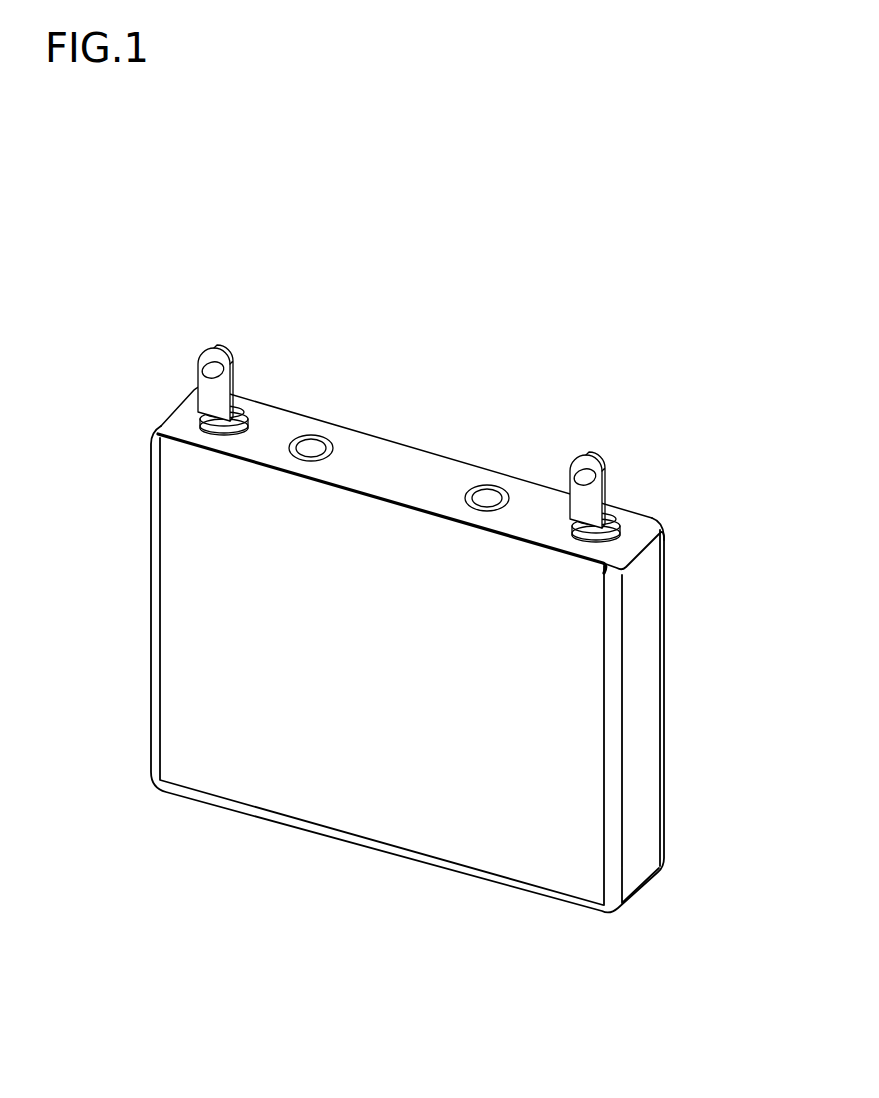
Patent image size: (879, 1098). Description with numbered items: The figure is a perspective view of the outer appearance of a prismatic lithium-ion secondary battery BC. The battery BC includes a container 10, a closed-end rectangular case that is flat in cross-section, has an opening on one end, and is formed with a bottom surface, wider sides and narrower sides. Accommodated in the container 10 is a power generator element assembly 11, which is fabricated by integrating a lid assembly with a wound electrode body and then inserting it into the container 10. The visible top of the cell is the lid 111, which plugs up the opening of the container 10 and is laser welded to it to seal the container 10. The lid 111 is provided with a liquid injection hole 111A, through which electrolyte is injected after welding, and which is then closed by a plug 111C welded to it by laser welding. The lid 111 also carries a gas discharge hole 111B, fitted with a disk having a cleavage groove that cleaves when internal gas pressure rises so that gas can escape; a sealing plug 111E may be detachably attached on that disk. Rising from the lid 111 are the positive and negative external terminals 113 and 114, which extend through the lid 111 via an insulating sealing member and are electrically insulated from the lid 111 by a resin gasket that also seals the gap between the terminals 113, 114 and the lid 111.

The container 10 is at (647, 690).
The power generator element assembly 11 is at (166, 411).
The lid 111 is at (437, 477).
The liquid injection hole 111A is at (489, 497).
The gas discharge hole 111B is at (312, 447).
The plug 111C is at (492, 497).
The sealing plug 111E is at (316, 447).
The positive external terminal 113 is at (202, 348).
The negative external terminal 114 is at (603, 468).
The lithium-ion secondary battery BC is at (146, 631).